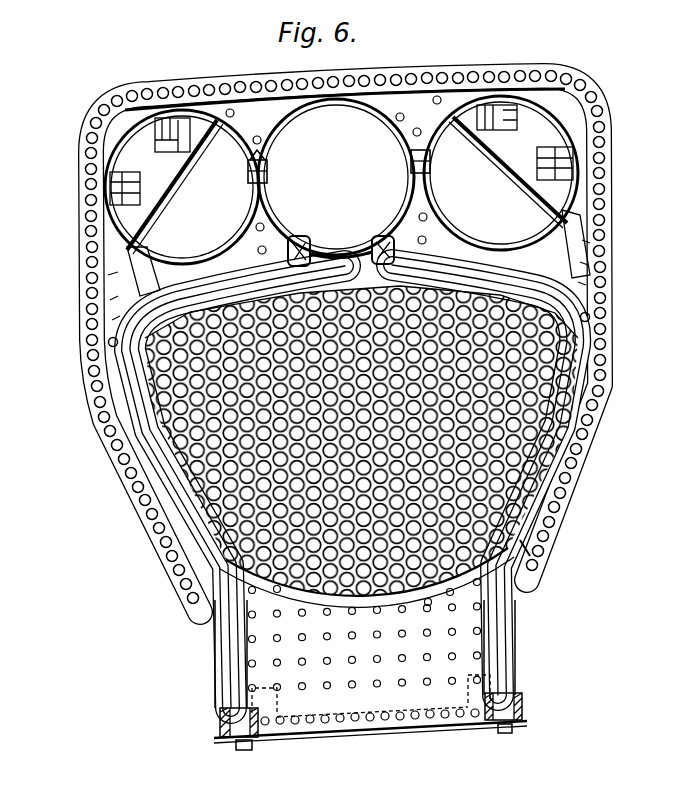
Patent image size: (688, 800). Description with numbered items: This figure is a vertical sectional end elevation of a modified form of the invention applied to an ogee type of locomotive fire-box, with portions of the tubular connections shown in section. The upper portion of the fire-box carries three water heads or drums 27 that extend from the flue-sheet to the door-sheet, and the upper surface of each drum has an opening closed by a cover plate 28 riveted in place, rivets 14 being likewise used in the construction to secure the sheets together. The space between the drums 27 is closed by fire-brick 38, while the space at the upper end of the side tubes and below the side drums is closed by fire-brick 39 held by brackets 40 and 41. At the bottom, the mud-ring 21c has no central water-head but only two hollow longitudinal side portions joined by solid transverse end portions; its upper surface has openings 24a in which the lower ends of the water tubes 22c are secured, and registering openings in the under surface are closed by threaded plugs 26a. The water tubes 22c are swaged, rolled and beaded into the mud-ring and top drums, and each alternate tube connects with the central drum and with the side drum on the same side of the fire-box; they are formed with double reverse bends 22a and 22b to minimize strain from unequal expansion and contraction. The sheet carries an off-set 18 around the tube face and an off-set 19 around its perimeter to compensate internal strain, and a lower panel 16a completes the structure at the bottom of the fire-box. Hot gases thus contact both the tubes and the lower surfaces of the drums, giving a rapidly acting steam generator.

The rivets 14 is at (592, 150).
The cover plates 28 is at (205, 96).
The double reverse bend 22a is at (365, 250).
The double reverse bend 22b is at (598, 282).
The water tubes 22c is at (497, 598).
The off-set 19 is at (607, 348).
The drums or headers 27 is at (250, 180).
The fire-brick 38 is at (270, 166).
The bracket 41 is at (572, 225).
The fire-brick 39 is at (578, 262).
The bracket 40 is at (593, 296).
The off-set 18 is at (490, 553).
The openings 24a is at (225, 717).
The mud-ring 21c is at (220, 732).
The threaded plugs 26a is at (244, 750).
The lower perforated panel 16a is at (333, 690).